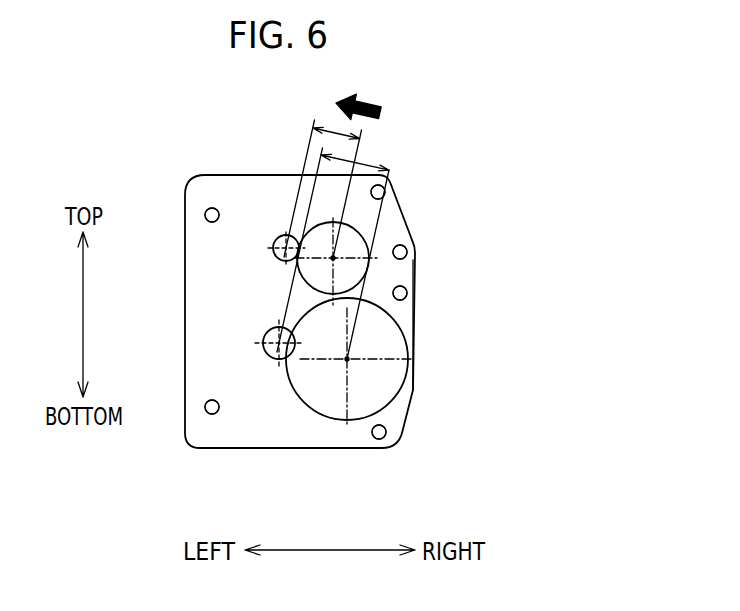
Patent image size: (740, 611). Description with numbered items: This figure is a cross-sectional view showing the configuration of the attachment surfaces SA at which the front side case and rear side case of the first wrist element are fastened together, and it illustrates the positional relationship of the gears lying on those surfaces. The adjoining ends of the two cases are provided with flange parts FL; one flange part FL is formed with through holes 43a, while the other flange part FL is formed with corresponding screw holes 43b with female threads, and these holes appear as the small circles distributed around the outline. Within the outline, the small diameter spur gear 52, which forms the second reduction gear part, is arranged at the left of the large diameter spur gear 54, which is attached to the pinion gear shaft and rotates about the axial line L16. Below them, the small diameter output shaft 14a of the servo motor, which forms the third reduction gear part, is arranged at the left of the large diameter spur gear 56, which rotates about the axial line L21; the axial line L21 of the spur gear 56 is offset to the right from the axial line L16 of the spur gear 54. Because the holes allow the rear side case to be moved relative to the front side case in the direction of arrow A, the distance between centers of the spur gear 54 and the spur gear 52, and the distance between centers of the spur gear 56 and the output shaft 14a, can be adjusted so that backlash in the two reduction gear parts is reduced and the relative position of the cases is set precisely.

The output shaft 14a is at (279, 357).
The through holes 43a is at (207, 207).
The screw holes 43b is at (362, 318).
The spur gear 52 is at (273, 246).
The spur gear 54 is at (306, 282).
The spur gear 56 is at (357, 432).
The axial line L16 is at (325, 262).
The axial line L21 is at (347, 359).
The attachment surfaces SA is at (233, 188).
The flange parts FL is at (414, 274).
The arrow A direction A is at (358, 94).